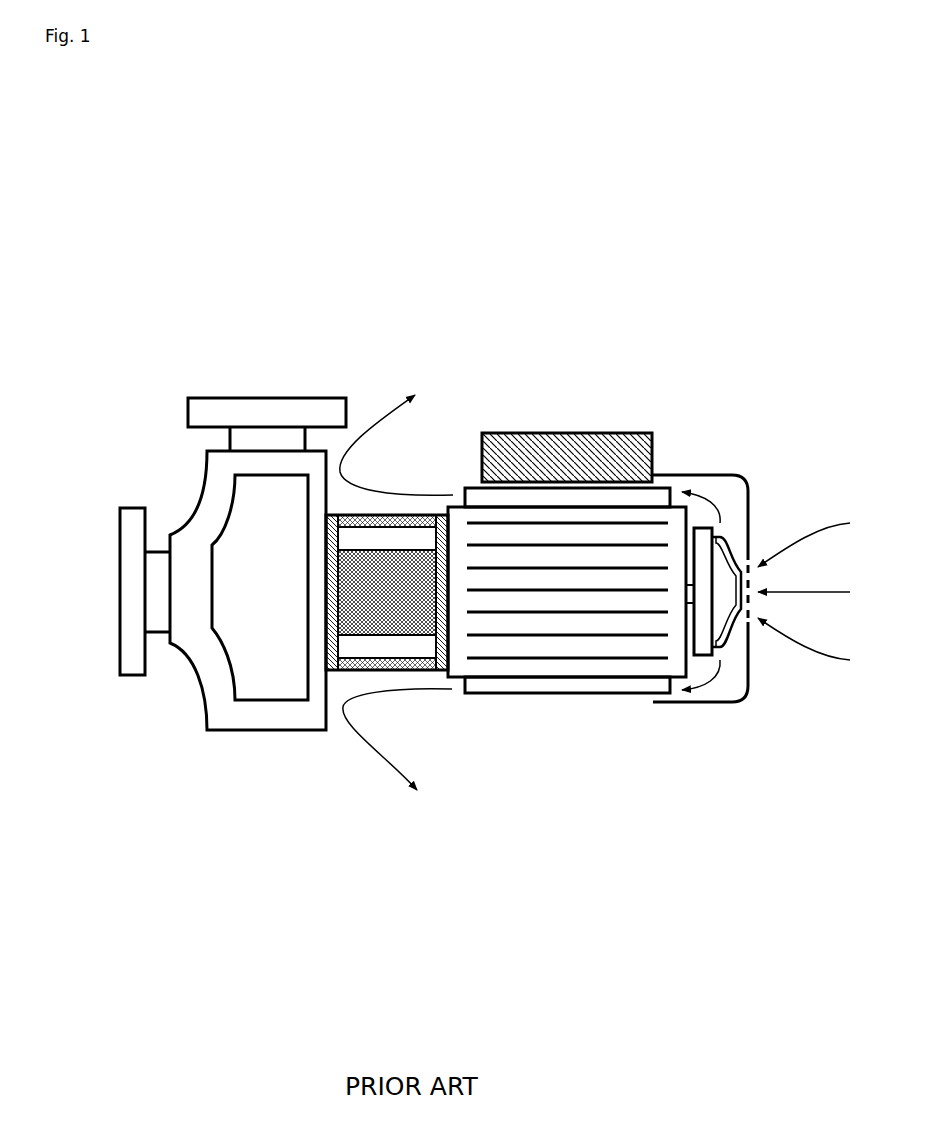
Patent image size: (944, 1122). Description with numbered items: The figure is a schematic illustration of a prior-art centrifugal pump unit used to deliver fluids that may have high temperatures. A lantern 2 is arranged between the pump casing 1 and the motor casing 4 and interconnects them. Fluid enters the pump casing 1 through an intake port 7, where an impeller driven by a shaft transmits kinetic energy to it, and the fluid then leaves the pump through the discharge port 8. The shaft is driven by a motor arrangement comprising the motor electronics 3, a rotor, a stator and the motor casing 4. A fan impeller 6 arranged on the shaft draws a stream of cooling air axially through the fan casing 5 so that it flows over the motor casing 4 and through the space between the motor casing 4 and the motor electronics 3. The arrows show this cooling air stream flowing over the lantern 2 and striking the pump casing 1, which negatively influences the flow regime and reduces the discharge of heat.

The pump casing 1 is at (210, 512).
The lantern 2 is at (363, 610).
The motor electronics 3 is at (572, 428).
The motor casing 4 is at (600, 625).
The fan casing 5 is at (747, 477).
The fan impeller 6 is at (717, 600).
The intake port 7 is at (132, 582).
The discharge port 8 is at (257, 408).